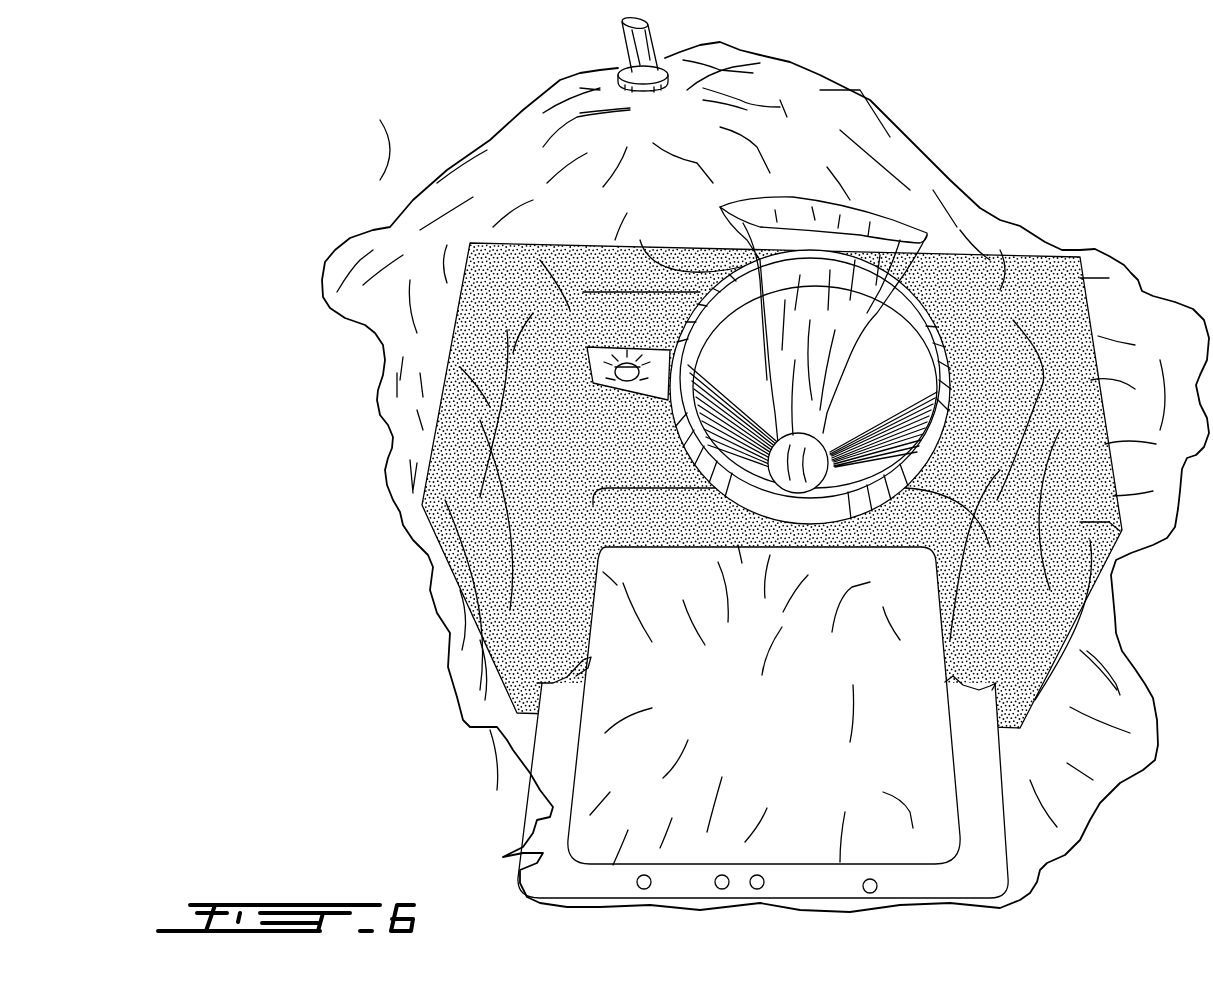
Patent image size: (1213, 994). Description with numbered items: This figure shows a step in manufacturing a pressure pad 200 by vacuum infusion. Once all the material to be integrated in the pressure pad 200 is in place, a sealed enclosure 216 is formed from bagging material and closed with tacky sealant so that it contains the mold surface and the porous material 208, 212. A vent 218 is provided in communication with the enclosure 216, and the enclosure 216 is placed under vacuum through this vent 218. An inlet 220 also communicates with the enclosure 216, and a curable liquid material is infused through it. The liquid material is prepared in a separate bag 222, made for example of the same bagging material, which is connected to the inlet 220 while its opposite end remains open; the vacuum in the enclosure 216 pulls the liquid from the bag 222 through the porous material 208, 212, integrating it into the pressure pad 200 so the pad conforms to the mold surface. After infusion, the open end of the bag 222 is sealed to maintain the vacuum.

The pressure pad 200 is at (984, 856).
The porous material 208 is at (789, 427).
The porous material 212 is at (996, 320).
The sealed enclosure 216 is at (470, 183).
The vent 218 is at (637, 41).
The inlet 220 is at (743, 498).
The bag 222 is at (861, 285).